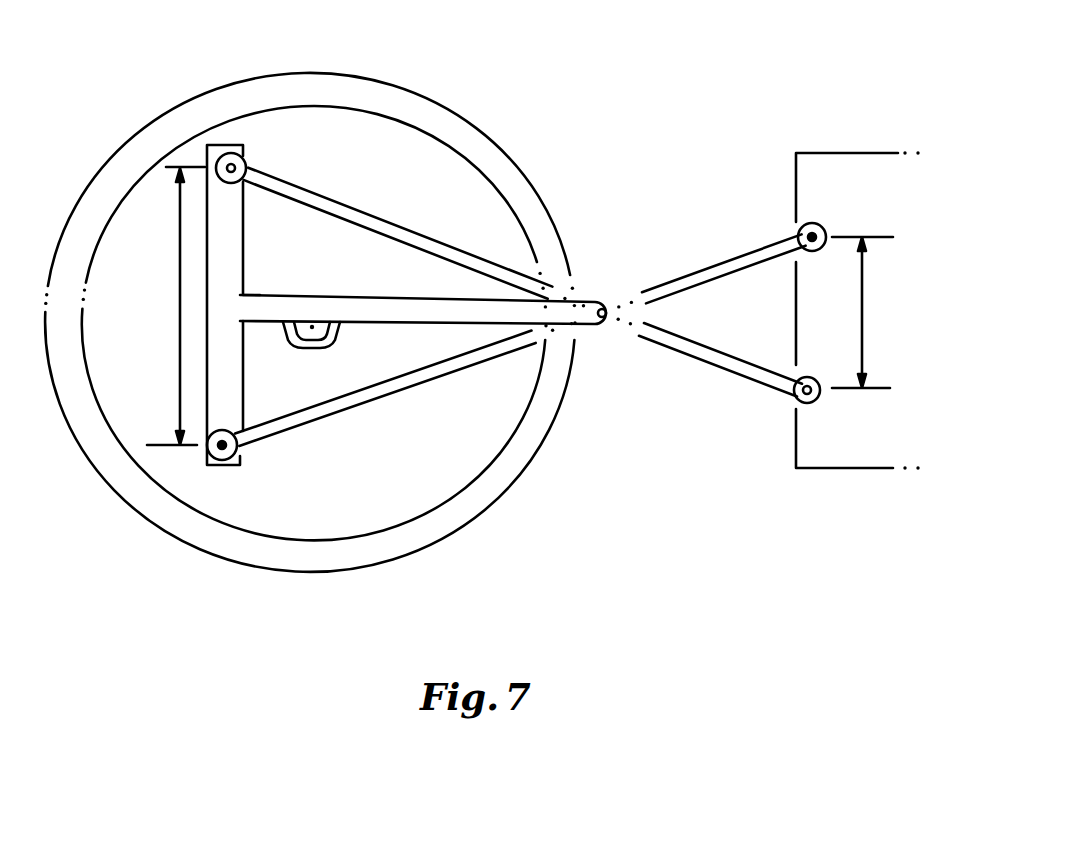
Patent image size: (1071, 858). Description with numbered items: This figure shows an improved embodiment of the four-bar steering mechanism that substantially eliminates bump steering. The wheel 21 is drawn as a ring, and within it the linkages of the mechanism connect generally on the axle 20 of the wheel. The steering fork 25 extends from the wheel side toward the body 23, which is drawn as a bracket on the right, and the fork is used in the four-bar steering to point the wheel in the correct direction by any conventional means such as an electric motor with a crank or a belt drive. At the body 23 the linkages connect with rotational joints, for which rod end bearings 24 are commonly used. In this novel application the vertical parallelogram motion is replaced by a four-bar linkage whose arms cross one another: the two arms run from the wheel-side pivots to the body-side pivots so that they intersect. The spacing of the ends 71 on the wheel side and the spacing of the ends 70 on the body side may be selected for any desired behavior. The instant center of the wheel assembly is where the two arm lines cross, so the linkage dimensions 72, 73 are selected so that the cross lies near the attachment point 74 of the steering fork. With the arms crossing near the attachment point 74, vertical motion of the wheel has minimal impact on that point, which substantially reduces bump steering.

The axle 20 is at (338, 338).
The wheel 21 is at (240, 86).
The body 23 is at (956, 219).
The rod end bearings 24 is at (795, 400).
The steering fork 25 is at (398, 298).
The spacing of ends 70 is at (862, 337).
The spacing of ends 71 is at (176, 290).
The linkage dimension 72 is at (397, 184).
The linkage dimension 73 is at (400, 388).
The attachment point 74 is at (601, 327).